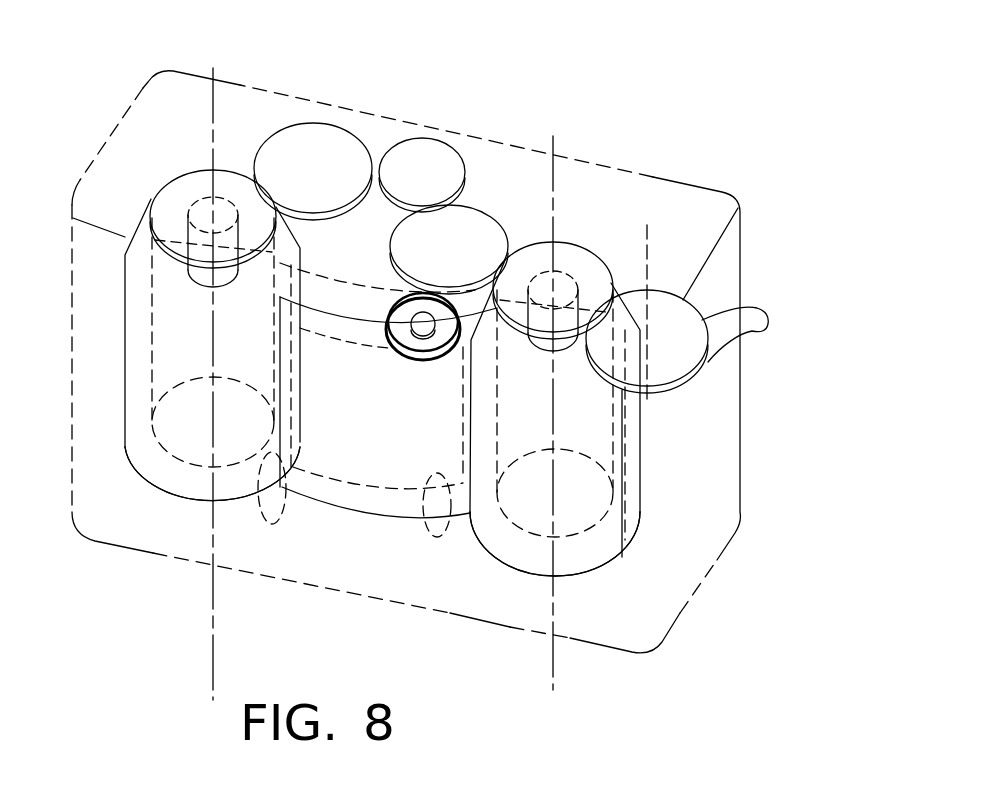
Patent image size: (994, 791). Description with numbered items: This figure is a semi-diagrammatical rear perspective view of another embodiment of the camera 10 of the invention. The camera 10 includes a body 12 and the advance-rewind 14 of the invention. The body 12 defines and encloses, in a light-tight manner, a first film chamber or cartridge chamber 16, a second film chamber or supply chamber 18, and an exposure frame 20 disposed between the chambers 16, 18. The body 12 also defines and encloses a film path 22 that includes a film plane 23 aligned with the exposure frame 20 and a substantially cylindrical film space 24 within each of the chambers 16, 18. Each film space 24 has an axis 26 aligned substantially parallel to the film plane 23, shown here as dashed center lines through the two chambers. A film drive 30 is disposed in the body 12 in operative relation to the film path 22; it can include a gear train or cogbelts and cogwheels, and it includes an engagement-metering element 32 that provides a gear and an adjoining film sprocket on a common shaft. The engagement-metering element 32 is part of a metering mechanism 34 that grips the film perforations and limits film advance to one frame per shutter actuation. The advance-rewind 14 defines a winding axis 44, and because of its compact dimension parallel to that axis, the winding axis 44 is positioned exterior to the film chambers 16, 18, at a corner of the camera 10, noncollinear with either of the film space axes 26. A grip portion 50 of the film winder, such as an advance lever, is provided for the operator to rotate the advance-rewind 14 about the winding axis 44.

The camera 10 is at (558, 63).
The body 12 is at (682, 181).
The advance-rewind 14 is at (702, 316).
The cartridge chamber 16 is at (191, 495).
The supply chamber 18 is at (498, 557).
The exposure frame 20 is at (362, 513).
The film path 22 is at (270, 524).
The film plane 23 is at (432, 520).
The film space 24 is at (171, 447).
The axis 26 is at (213, 96).
The film drive 30 is at (446, 134).
The engagement-metering element 32 is at (409, 354).
The metering mechanism 34 is at (383, 349).
The winding axis 44 is at (648, 250).
The grip portion 50 is at (771, 326).